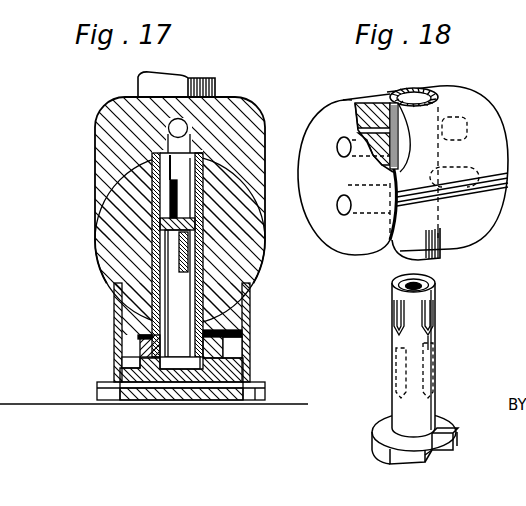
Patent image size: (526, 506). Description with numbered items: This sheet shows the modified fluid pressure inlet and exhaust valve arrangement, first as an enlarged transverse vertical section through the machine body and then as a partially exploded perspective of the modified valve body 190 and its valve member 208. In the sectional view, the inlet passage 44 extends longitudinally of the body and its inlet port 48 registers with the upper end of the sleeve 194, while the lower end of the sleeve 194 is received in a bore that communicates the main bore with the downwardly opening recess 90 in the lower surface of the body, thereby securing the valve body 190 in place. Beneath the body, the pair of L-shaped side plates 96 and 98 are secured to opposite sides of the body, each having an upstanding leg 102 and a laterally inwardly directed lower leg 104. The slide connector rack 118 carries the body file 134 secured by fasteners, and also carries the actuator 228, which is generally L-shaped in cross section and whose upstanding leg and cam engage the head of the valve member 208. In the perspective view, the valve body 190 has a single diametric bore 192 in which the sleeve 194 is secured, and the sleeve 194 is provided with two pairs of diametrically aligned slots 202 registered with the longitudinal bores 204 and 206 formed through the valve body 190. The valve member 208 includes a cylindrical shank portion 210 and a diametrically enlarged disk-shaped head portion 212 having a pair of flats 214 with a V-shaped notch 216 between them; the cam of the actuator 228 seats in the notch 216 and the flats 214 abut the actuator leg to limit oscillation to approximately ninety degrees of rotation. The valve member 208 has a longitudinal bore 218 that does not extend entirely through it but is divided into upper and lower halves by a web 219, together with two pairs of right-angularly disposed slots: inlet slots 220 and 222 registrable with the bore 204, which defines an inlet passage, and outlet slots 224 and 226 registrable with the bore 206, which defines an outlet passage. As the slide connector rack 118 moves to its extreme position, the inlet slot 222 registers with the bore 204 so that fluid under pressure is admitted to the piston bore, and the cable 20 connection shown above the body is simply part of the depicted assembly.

In FIG. 17, the cable 20 is at (211, 61).
In FIG. 17, the second inlet passage 44 is at (187, 131).
In FIG. 17, the inlet port 48 is at (167, 143).
In FIG. 17, the downwardly opening recess 90 is at (243, 366).
In FIG. 17, the side plate 96 is at (248, 347).
In FIG. 17, the side plate 98 is at (114, 342).
In FIG. 17, the upstanding leg 102 is at (114, 302).
In FIG. 17, the lower leg 104 is at (128, 382).
In FIG. 17, the slide connector rack 118 is at (186, 388).
In FIG. 17, the body file 134 is at (263, 392).
In FIG. 18, the valve body 190 is at (483, 101).
In FIG. 18, the diametric bore 192 is at (389, 96).
In FIG. 18, the sleeve 194 is at (443, 247).
In FIG. 18, the slots 202 is at (399, 153).
In FIG. 18, the longitudinal bore 204 is at (338, 152).
In FIG. 18, the longitudinal bore 206 is at (338, 213).
In FIG. 17, the valve member 208 is at (203, 332).
In FIG. 18, the valve member 208 is at (428, 354).
In FIG. 18, the cylindrical shank portion 210 is at (389, 356).
In FIG. 18, the disk-shaped head portion 212 is at (372, 446).
In FIG. 18, the flats 214 is at (408, 458).
In FIG. 18, the V-shaped notch 216 is at (440, 455).
In FIG. 17, the longitudinal bore 218 is at (159, 268).
In FIG. 18, the longitudinal bore 218 is at (392, 285).
In FIG. 17, the web 219 is at (160, 226).
In FIG. 17, the inlet slot 220 is at (180, 197).
In FIG. 18, the inlet slot 220 is at (394, 319).
In FIG. 18, the inlet slot 222 is at (435, 313).
In FIG. 17, the outlet slot 224 is at (184, 266).
In FIG. 18, the outlet slot 224 is at (392, 379).
In FIG. 18, the outlet slot 226 is at (434, 381).
In FIG. 17, the actuator 228 is at (138, 347).